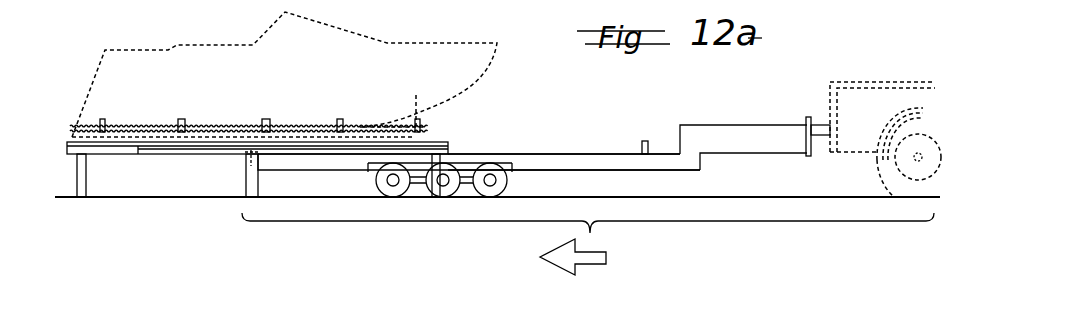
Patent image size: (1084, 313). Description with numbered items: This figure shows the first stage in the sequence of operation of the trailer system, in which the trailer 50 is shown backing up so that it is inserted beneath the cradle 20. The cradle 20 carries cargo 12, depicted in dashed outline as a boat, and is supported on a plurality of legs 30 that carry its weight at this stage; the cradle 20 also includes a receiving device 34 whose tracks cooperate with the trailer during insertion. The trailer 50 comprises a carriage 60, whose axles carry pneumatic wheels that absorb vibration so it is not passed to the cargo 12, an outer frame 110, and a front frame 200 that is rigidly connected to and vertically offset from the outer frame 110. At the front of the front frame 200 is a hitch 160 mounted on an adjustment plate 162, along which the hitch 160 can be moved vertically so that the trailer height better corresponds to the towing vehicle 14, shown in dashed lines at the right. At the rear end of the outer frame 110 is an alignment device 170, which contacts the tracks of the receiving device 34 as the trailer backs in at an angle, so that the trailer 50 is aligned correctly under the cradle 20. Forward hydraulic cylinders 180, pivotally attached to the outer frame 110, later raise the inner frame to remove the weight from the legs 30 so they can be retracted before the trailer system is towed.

The cargo 12 is at (440, 43).
The vehicle 14 is at (893, 80).
The cradle 20 is at (67, 134).
The legs 30 is at (87, 172).
The receiving device 34 is at (122, 156).
The trailer 50 is at (554, 148).
The carriage 60 is at (513, 174).
The outer frame 110 is at (326, 170).
The hitch 160 is at (807, 153).
The adjustment plate 162 is at (820, 122).
The alignment device 170 is at (239, 164).
The forward hydraulic cylinders 180 is at (660, 146).
The front frame 200 is at (757, 122).